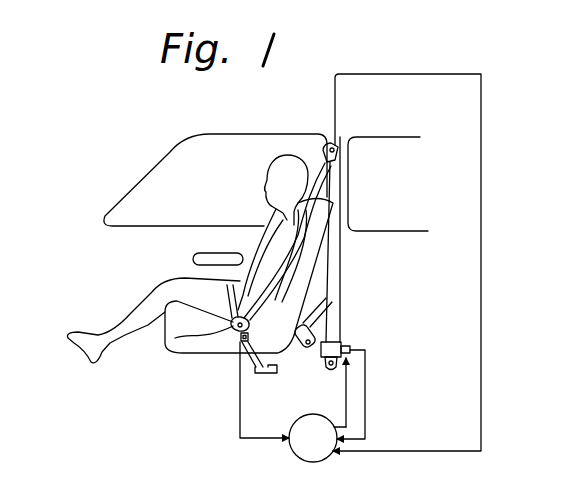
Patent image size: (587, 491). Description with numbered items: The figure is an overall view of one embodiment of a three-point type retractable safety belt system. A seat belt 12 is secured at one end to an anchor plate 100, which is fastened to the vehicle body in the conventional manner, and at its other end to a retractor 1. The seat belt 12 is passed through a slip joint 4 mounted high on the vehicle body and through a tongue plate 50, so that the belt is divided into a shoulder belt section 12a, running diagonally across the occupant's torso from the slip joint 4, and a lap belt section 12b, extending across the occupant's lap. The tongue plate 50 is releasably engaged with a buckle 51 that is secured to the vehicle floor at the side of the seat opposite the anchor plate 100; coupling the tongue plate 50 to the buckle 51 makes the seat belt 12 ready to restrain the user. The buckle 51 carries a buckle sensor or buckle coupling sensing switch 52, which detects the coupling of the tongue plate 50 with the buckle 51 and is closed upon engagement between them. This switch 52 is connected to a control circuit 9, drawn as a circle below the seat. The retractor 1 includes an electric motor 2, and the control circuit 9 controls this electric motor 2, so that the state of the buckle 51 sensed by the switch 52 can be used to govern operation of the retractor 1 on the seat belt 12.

The retractor 1 is at (351, 332).
The electric motor 2 is at (352, 346).
The slip joint 4 is at (340, 140).
The control circuit 9 is at (320, 453).
The seat belt 12 is at (340, 253).
The shoulder belt section 12a is at (316, 166).
The lap belt section 12b is at (227, 302).
The tongue plate 50 is at (175, 338).
The buckle 51 is at (240, 372).
The buckle coupling sensing switch 52 is at (240, 338).
The anchor plate 100 is at (318, 326).